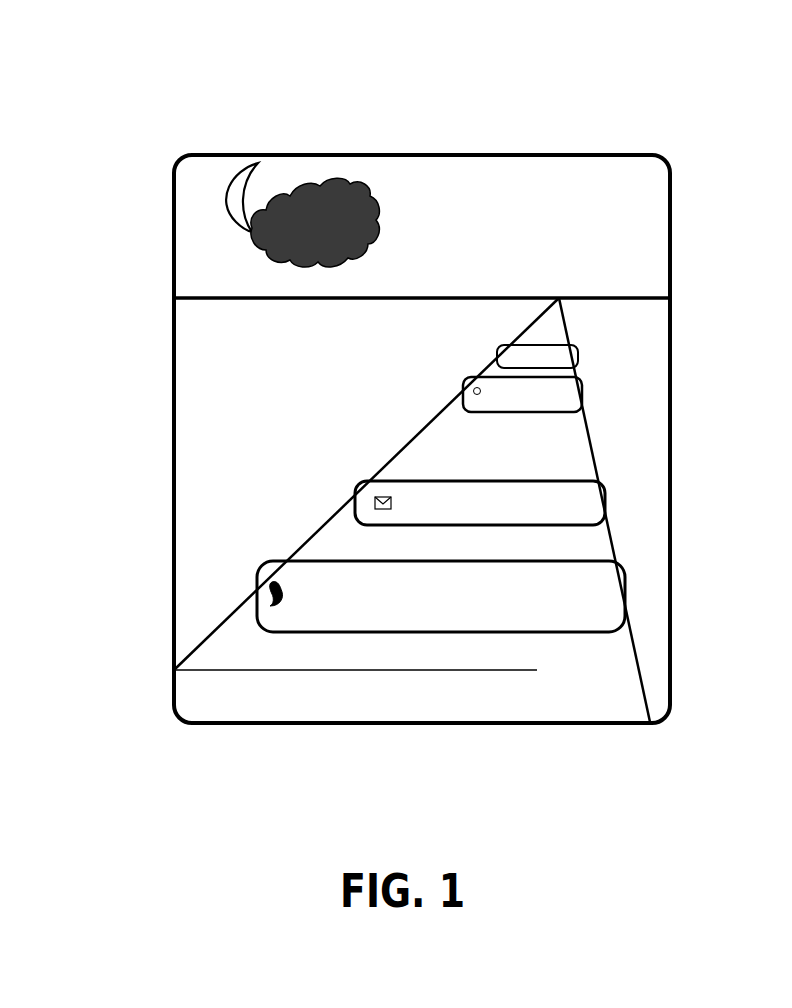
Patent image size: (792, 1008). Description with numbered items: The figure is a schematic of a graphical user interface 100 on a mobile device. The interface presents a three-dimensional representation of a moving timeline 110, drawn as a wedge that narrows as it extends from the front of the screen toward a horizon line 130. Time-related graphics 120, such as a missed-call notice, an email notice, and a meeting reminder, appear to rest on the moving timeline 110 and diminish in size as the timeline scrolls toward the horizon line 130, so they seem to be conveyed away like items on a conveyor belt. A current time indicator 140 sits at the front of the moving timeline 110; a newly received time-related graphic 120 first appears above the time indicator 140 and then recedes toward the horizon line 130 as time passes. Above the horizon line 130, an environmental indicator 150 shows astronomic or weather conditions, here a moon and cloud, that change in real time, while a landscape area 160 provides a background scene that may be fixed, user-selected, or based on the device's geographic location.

The graphical user interface 100 is at (196, 61).
The moving timeline 110 is at (593, 430).
The time-related graphics 120 is at (608, 507).
The horizon line 130 is at (605, 295).
The current time indicator 140 is at (587, 687).
The environmental indicator 150 is at (198, 178).
The landscape area 160 is at (257, 402).